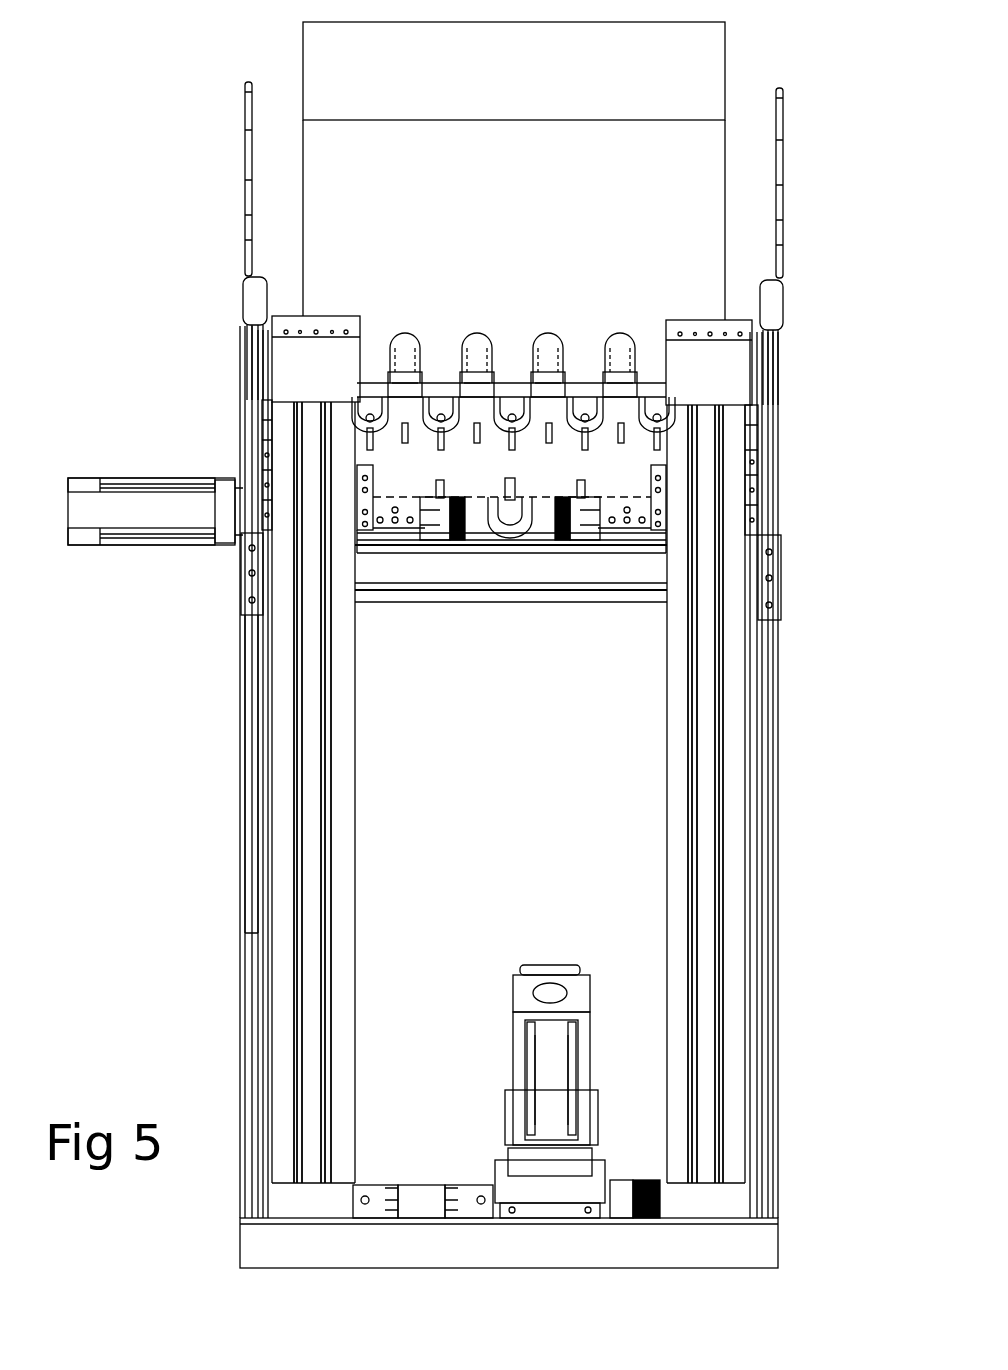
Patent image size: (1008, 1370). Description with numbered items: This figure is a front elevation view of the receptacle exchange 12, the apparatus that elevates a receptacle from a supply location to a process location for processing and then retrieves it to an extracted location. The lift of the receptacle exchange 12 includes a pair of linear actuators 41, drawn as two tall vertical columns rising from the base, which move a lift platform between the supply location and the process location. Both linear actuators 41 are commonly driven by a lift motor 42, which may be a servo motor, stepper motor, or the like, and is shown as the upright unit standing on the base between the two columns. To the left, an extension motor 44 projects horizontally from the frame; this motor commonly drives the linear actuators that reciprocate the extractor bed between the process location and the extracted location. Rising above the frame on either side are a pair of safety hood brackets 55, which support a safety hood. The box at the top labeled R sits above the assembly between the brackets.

The reagent container R is at (725, 85).
The safety hood brackets 55 is at (245, 197).
The receptacle exchange 12 is at (886, 211).
The extension motor 44 is at (115, 478).
The linear actuators 41 is at (355, 778).
The lift motor 42 is at (512, 1057).